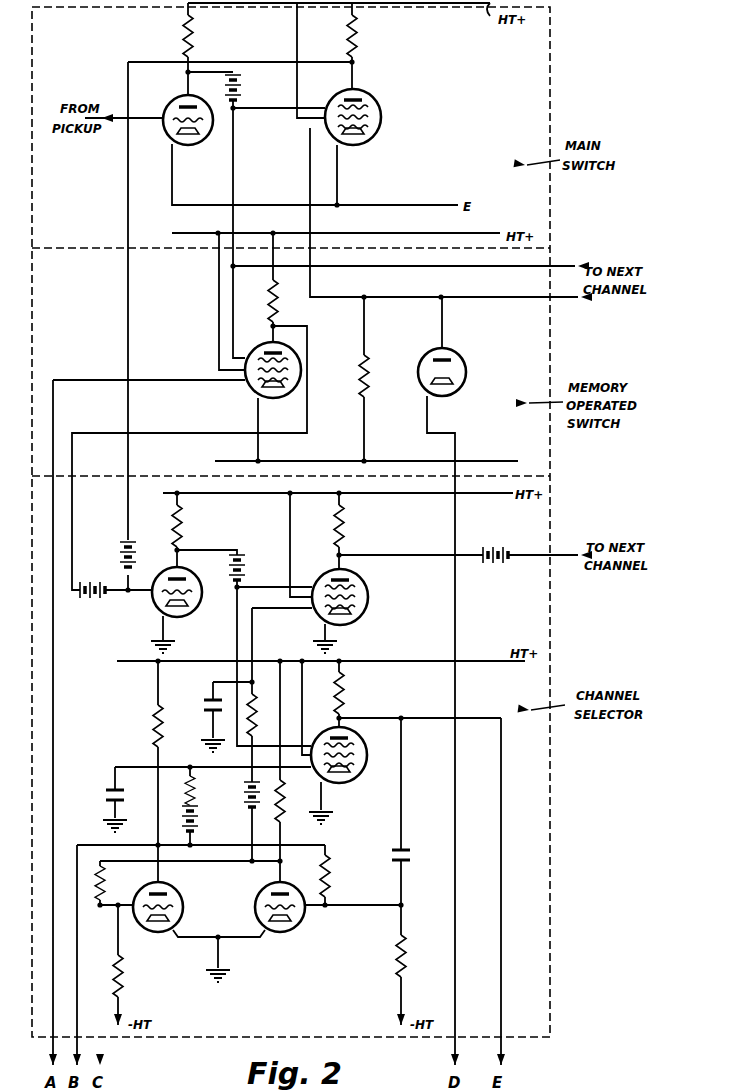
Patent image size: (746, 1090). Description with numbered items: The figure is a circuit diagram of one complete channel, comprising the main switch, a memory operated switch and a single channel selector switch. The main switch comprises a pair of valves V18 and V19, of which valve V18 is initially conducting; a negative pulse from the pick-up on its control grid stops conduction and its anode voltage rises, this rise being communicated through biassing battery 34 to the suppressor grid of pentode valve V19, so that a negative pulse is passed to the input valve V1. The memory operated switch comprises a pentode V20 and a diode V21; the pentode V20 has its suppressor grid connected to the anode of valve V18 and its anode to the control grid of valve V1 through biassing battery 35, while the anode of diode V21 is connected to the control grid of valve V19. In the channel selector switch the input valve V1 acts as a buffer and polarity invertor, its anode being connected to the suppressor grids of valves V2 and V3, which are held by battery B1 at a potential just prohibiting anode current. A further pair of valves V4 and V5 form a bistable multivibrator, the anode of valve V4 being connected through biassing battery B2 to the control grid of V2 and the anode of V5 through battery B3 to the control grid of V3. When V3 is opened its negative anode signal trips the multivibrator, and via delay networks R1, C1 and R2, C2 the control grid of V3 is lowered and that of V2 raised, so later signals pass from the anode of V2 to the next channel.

The valve V18 is at (206, 138).
The pentode valve V19 is at (372, 138).
The pentode valve V20 is at (285, 395).
The diode valve V21 is at (461, 385).
The input valve V1 is at (199, 603).
The valve V2 is at (369, 587).
The valve V3 is at (364, 768).
The valve V4 is at (255, 897).
The valve V5 is at (183, 897).
The biassing battery 34 is at (248, 92).
The biassing battery 35 is at (92, 600).
The battery B1 is at (246, 565).
The biassing battery B2 is at (244, 796).
The biassing battery B3 is at (197, 830).
The capacitor C1 is at (104, 795).
The capacitor C2 is at (202, 706).
The resistor R1 is at (196, 788).
The resistor R2 is at (257, 705).